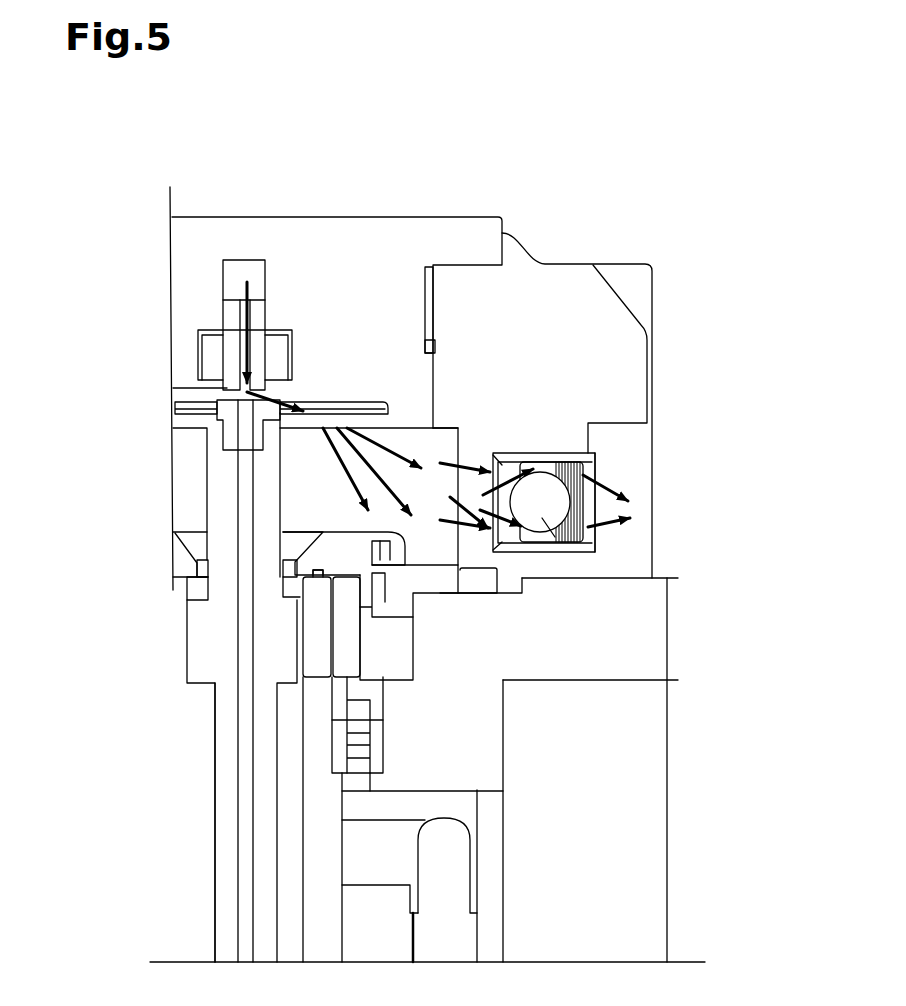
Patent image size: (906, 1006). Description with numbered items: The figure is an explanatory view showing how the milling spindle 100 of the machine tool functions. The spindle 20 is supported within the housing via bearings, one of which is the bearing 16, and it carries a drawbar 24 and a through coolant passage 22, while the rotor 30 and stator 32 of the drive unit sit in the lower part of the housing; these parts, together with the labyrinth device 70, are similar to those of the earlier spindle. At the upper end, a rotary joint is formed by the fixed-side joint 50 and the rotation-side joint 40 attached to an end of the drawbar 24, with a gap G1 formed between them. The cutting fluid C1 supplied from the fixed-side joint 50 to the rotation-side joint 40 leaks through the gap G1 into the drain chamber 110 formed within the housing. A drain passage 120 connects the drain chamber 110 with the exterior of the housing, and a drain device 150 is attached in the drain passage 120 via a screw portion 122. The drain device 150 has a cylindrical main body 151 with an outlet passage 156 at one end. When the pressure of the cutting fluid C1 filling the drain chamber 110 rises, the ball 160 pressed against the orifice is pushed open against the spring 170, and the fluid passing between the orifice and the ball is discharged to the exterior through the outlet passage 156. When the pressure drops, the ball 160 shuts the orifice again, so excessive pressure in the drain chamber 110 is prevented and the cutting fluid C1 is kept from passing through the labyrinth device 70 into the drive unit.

The milling spindle 100 is at (734, 270).
The drain passage 120 is at (487, 453).
The drain chamber 110 is at (300, 470).
The fixed-side joint 50 is at (257, 320).
The cutting fluid C1 is at (243, 287).
The gap G1 is at (225, 392).
The rotation-side joint 40 is at (224, 410).
The labyrinth device 70 is at (392, 553).
The screw portion 122 is at (557, 450).
The drain device 150 is at (606, 458).
The outlet passage 156 is at (592, 530).
The main body 151 is at (590, 553).
The ball 160 is at (588, 546).
The spring 170 is at (597, 510).
The rotor 30 is at (380, 927).
The stator 32 is at (450, 855).
The bearing 16 is at (355, 745).
The drawbar 24 is at (222, 777).
The through coolant passage 22 is at (243, 820).
The spindle 20 is at (323, 855).